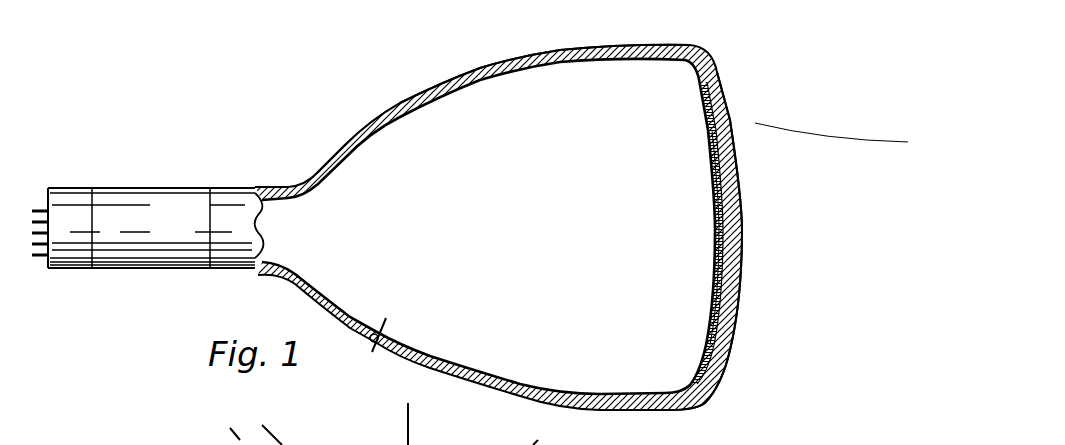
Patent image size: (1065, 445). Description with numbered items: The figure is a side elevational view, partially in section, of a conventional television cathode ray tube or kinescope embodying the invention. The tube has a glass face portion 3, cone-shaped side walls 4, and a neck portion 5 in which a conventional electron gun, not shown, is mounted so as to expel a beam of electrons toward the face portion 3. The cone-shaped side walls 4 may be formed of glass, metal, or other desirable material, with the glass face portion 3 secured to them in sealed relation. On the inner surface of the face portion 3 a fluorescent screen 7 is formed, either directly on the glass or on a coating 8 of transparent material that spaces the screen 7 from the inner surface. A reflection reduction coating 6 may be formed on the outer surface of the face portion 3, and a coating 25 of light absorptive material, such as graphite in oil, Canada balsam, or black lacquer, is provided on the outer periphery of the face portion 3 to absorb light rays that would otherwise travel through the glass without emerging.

The face portion 3 is at (737, 183).
The cone-shaped side walls 4 is at (502, 67).
The neck portion 5 is at (158, 270).
The reflection reduction coating 6 is at (728, 120).
The fluorescent screen 7 is at (714, 223).
The coating of transparent material 8 is at (716, 258).
The coating of light absorptive material 25 is at (690, 410).